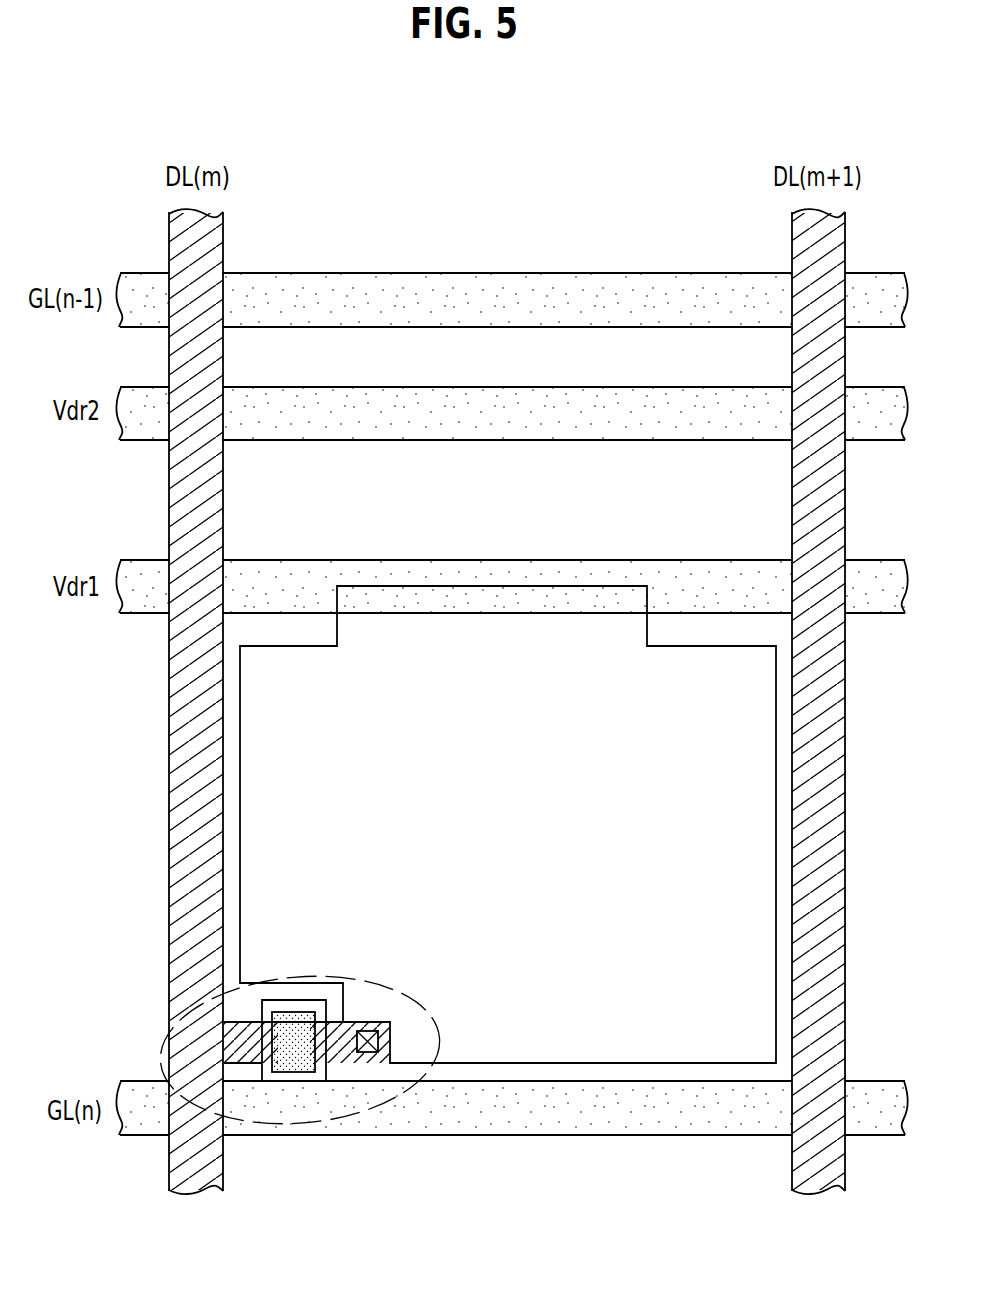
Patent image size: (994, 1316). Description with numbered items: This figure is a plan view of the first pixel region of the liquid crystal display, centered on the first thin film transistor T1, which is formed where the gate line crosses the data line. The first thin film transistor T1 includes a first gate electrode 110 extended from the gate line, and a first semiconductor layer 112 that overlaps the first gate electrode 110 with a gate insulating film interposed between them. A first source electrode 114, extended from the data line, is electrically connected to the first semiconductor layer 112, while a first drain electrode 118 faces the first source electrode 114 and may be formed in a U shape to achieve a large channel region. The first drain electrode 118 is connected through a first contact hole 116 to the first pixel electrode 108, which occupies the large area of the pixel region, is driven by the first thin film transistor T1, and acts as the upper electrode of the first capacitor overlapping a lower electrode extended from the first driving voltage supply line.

The first pixel electrode 108 is at (678, 765).
The first gate electrode 110 is at (307, 1013).
The first semiconductor layer 112 is at (308, 1014).
The first source electrode 114 is at (251, 1064).
The first contact hole 116 is at (379, 1042).
The first drain electrode 118 is at (368, 1064).
The first thin film transistor T1 is at (407, 1022).